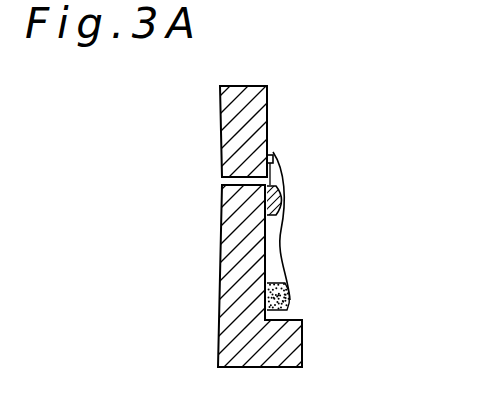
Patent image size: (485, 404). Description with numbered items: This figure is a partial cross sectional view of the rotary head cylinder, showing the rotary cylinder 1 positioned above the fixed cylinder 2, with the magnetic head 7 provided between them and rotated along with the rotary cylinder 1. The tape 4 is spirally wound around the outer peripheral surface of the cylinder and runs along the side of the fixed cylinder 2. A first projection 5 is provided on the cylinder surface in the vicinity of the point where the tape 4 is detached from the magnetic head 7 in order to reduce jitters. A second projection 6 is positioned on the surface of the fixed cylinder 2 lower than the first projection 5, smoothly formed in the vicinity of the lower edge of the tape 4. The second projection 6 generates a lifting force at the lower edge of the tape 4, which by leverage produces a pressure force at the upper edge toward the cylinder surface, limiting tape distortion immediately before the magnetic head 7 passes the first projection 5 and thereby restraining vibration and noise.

The rotary cylinder 1 is at (220, 113).
The fixed cylinder 2 is at (222, 240).
The tape 4 is at (285, 265).
The first projection 5 is at (285, 200).
The second projection 6 is at (290, 298).
The magnetic head 7 is at (275, 158).